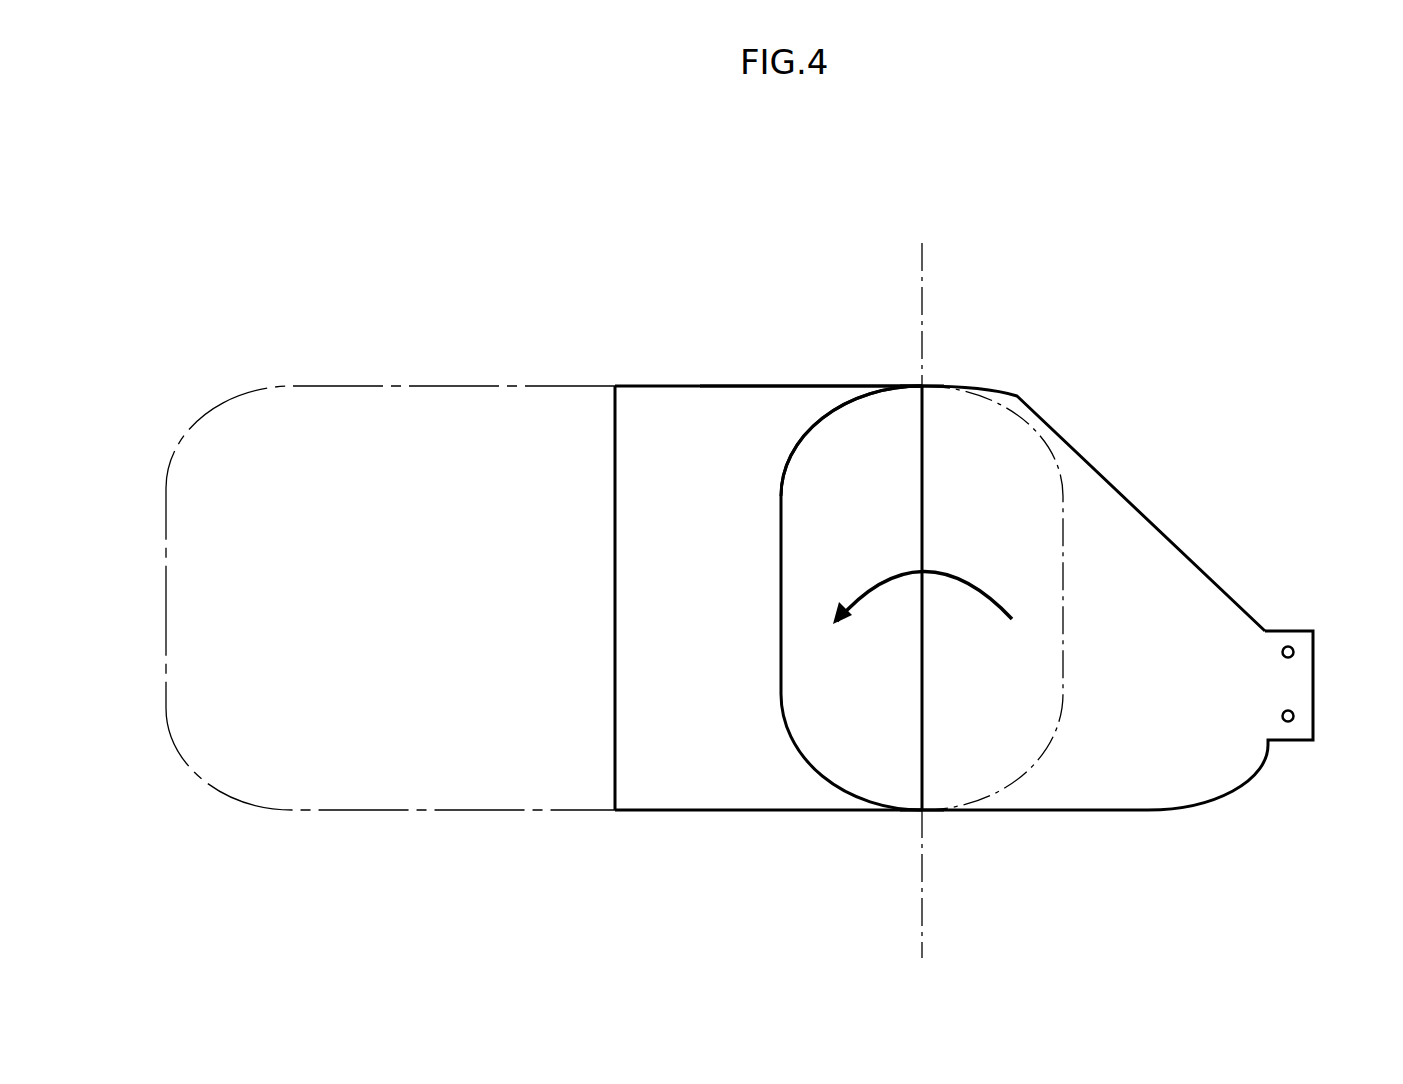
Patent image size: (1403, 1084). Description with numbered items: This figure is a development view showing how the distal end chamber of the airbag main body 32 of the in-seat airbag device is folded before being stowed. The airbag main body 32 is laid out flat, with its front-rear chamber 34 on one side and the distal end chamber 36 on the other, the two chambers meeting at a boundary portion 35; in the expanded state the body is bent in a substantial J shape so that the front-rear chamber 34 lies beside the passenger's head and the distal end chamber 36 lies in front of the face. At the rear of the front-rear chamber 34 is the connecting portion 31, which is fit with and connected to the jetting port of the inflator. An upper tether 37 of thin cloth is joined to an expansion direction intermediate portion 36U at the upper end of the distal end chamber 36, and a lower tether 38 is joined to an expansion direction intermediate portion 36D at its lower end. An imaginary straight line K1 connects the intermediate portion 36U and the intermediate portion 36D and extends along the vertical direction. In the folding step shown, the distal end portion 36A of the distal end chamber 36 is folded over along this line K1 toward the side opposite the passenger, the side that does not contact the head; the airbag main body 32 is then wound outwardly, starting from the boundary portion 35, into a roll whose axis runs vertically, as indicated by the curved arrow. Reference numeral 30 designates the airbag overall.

The airbag 30 is at (754, 596).
The connecting portion 31 is at (1298, 630).
The airbag main body 32 is at (640, 384).
The front-rear chamber 34 is at (1176, 591).
The boundary portion 35 is at (615, 598).
The distal end chamber 36 is at (672, 786).
The distal end portion 36A is at (871, 432).
The expansion direction intermediate portion 36U is at (922, 386).
The expansion direction intermediate portion 36D is at (922, 810).
The upper tether 37 is at (771, 385).
The lower tether 38 is at (753, 812).
The imaginary straight line K1 is at (925, 262).